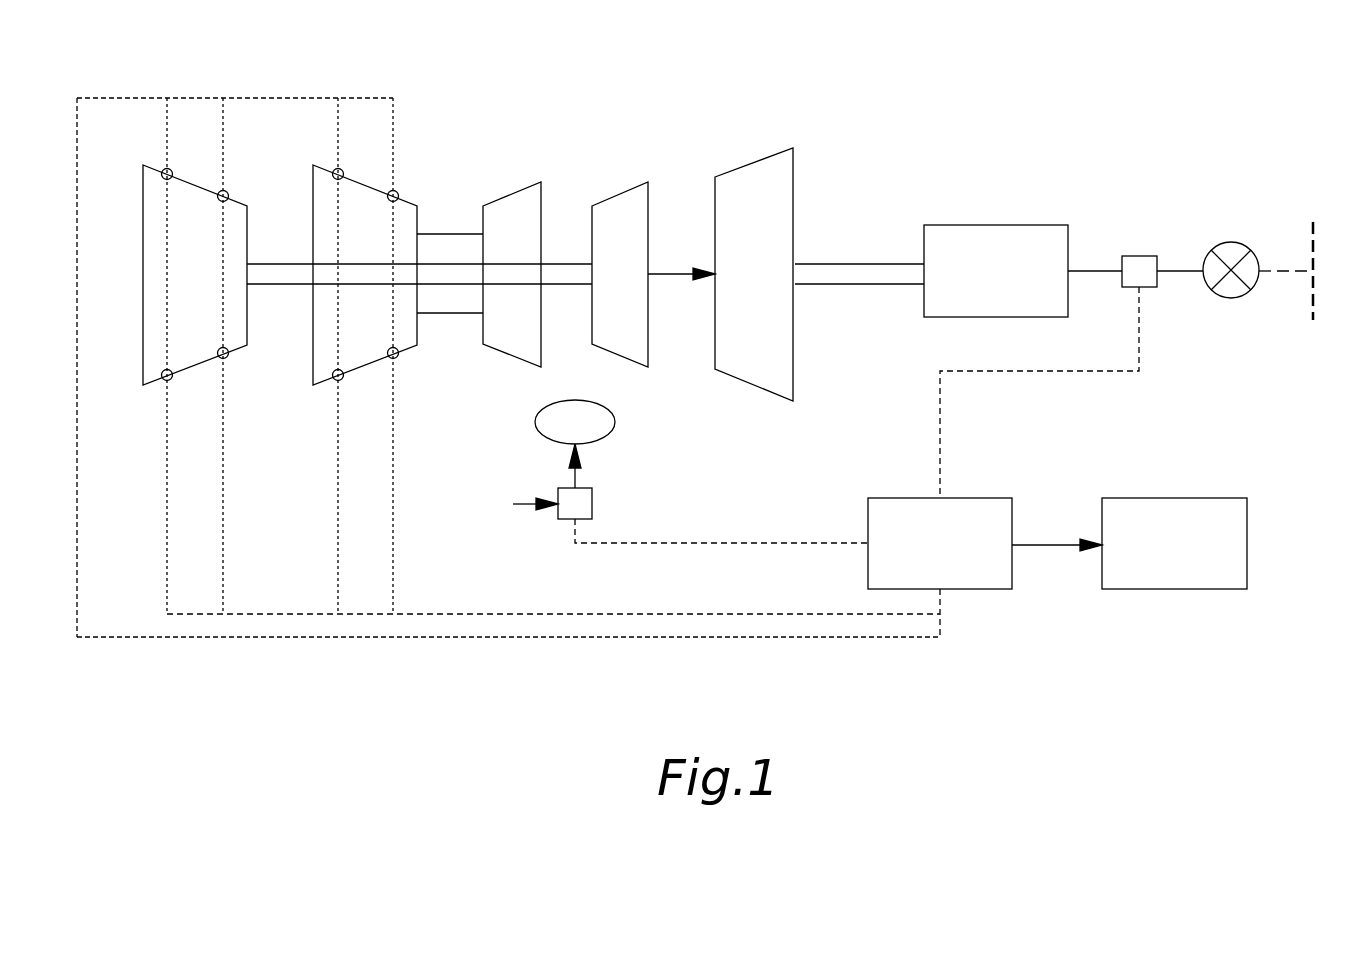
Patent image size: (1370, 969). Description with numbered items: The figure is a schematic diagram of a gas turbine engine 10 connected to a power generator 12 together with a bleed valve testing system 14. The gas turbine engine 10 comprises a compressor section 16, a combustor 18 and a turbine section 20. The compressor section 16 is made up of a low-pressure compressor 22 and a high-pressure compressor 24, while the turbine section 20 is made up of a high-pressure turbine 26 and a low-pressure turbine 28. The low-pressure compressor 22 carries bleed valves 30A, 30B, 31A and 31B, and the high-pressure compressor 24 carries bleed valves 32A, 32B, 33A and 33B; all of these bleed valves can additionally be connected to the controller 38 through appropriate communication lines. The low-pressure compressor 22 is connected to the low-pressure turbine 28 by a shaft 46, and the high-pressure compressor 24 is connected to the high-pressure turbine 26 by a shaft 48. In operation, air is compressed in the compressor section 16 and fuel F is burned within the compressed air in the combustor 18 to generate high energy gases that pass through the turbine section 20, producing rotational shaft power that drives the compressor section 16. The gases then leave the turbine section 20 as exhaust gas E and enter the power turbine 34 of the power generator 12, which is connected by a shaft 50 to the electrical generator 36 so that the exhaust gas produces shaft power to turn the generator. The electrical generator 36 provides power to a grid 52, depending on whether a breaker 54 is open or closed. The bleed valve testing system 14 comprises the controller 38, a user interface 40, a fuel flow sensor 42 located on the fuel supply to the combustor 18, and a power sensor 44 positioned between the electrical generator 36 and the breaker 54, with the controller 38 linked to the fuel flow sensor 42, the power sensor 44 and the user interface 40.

The gas turbine engine 10 is at (421, 80).
The power generator 12 is at (882, 147).
The bleed valve testing system 14 is at (1039, 650).
The compressor section 16 is at (242, 452).
The combustor 18 is at (616, 422).
The turbine section 20 is at (540, 133).
The low-pressure compressor 22 is at (143, 271).
The high-pressure compressor 24 is at (313, 328).
The high-pressure turbine 26 is at (513, 195).
The low-pressure turbine 28 is at (621, 195).
The bleed valve 30A is at (172, 170).
The bleed valve 30B is at (172, 379).
The bleed valve 31A is at (228, 192).
The bleed valve 31B is at (228, 357).
The bleed valve 32A is at (343, 170).
The bleed valve 32B is at (343, 379).
The bleed valve 33A is at (398, 192).
The bleed valve 33B is at (398, 357).
The power turbine 34 is at (752, 164).
The electrical generator 36 is at (995, 225).
The controller 38 is at (995, 498).
The user interface 40 is at (1173, 498).
The fuel flow sensor 42 is at (593, 504).
The power sensor 44 is at (1139, 256).
The shaft 46 is at (565, 286).
The shaft 48 is at (455, 313).
The shaft 50 is at (858, 264).
The grid 52 is at (1315, 250).
The breaker 54 is at (1231, 242).
The exhaust gas E is at (670, 274).
The fuel F is at (513, 504).